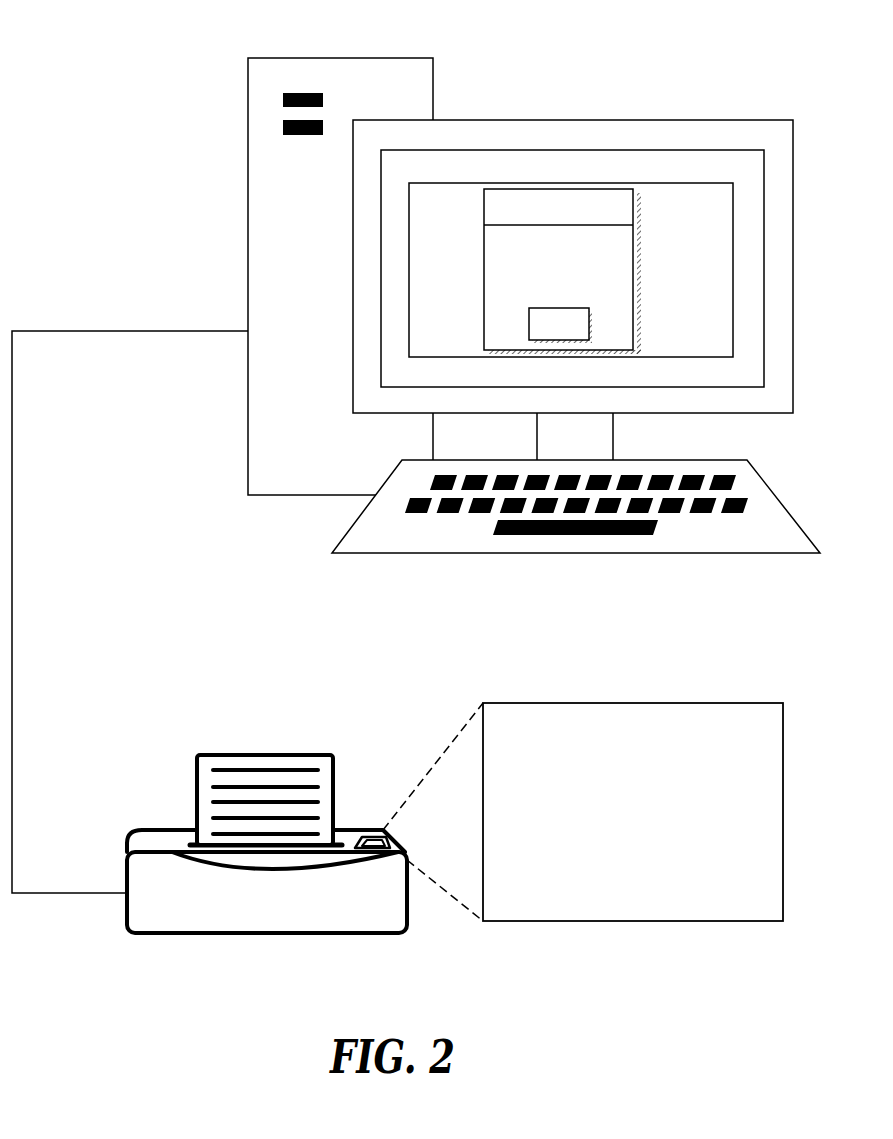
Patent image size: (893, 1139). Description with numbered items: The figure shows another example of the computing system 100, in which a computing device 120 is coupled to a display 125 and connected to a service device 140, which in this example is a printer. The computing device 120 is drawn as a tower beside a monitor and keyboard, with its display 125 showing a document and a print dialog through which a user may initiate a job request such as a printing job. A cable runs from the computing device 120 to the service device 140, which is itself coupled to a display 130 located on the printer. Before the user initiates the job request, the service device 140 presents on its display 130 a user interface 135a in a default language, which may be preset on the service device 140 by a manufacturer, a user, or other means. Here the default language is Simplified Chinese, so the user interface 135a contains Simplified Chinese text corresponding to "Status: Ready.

The computing system 100 is at (118, 76).
The computing device 120 is at (248, 153).
The display 125 is at (354, 228).
The display 130 is at (372, 832).
The user interface 135a is at (783, 822).
The service device 140 is at (140, 838).